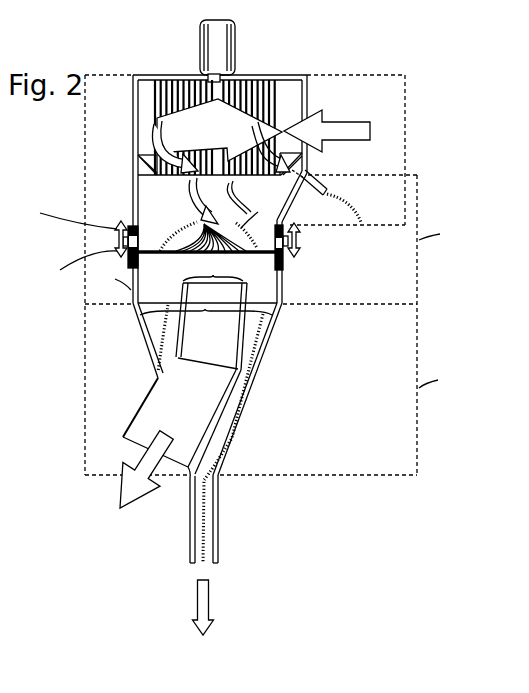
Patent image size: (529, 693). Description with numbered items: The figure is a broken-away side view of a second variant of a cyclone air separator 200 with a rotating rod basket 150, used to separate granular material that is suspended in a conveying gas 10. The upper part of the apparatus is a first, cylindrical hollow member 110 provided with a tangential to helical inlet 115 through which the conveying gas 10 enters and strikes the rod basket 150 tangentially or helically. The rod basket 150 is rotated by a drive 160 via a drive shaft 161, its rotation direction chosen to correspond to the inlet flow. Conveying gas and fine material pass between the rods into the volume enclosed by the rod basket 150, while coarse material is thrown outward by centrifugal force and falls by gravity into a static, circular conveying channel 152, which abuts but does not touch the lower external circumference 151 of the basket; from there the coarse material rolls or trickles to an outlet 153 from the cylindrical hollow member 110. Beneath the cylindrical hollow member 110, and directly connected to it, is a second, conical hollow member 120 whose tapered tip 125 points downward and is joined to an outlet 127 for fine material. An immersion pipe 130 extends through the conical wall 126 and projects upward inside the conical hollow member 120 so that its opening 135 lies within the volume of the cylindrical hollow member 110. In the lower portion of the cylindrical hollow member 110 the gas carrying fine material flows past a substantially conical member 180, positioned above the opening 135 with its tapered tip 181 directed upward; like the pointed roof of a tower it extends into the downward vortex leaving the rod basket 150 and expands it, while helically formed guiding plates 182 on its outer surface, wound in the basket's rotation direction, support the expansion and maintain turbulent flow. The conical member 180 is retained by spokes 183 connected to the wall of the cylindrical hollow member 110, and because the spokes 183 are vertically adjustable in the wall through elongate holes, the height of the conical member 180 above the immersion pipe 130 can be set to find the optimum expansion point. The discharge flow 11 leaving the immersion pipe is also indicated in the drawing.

The air separator 200 is at (314, 62).
The conveying gas 10 is at (275, 130).
The discharge flow 11 is at (140, 478).
The cylindrical hollow member 110 is at (132, 233).
The inlet 115 is at (407, 142).
The conical hollow member 120 is at (84, 392).
The tapered tip 125 is at (216, 476).
The conical wall 126 is at (148, 359).
The outlet 127 is at (218, 538).
The immersion pipe 130 is at (190, 465).
The opening 135 is at (246, 284).
The rod basket 150 is at (278, 81).
The lower external circumference 151 is at (136, 175).
The conveying channel 152 is at (293, 172).
The outlet 153 is at (326, 184).
The drive 160 is at (199, 50).
The drive shaft 161 is at (208, 76).
The substantially conical member 180 is at (193, 241).
The tapered tip 181 is at (203, 227).
The guiding plate 182 is at (178, 256).
The spoke 183 is at (128, 229).